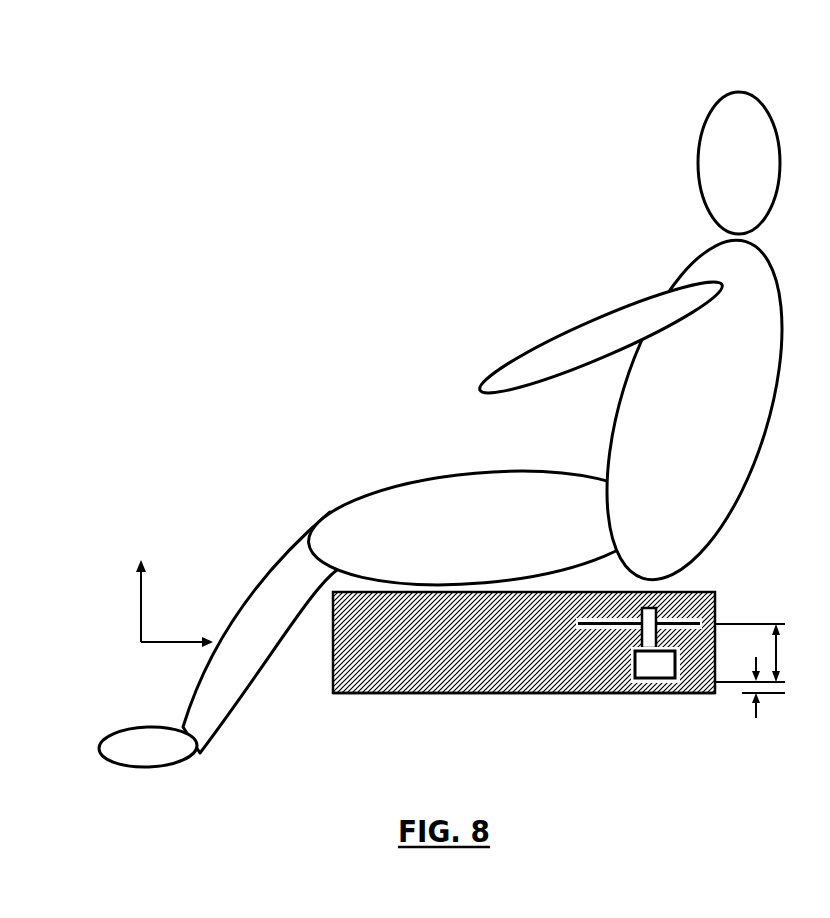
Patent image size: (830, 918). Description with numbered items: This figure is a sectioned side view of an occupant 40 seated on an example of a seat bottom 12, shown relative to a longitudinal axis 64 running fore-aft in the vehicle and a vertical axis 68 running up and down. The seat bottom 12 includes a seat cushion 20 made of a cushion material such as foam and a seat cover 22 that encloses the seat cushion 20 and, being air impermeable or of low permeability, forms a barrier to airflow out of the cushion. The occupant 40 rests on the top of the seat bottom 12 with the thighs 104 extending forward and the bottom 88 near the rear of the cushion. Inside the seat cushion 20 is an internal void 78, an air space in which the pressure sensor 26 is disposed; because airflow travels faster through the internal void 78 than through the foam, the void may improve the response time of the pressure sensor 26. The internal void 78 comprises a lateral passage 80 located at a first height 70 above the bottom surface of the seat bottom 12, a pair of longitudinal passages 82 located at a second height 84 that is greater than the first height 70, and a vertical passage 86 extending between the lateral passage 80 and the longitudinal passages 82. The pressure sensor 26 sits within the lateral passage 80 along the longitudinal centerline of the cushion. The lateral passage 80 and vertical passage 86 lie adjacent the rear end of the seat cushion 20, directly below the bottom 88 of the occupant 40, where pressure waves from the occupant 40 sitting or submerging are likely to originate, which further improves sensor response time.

The seat bottom 12 is at (552, 647).
The seat cushion 20 is at (472, 663).
The seat cover 22 is at (403, 693).
The pressure sensor 26 is at (655, 667).
The occupant 40 is at (458, 397).
The longitudinal axis 64 is at (177, 641).
The vertical axis 68 is at (142, 589).
The first height 70 is at (763, 698).
The internal void 78 is at (640, 612).
The lateral passage 80 is at (632, 666).
The longitudinal passages 82 is at (593, 620).
The second height 84 is at (759, 653).
The vertical passage 86 is at (638, 634).
The bottom 88 is at (665, 581).
The thighs 104 is at (455, 523).